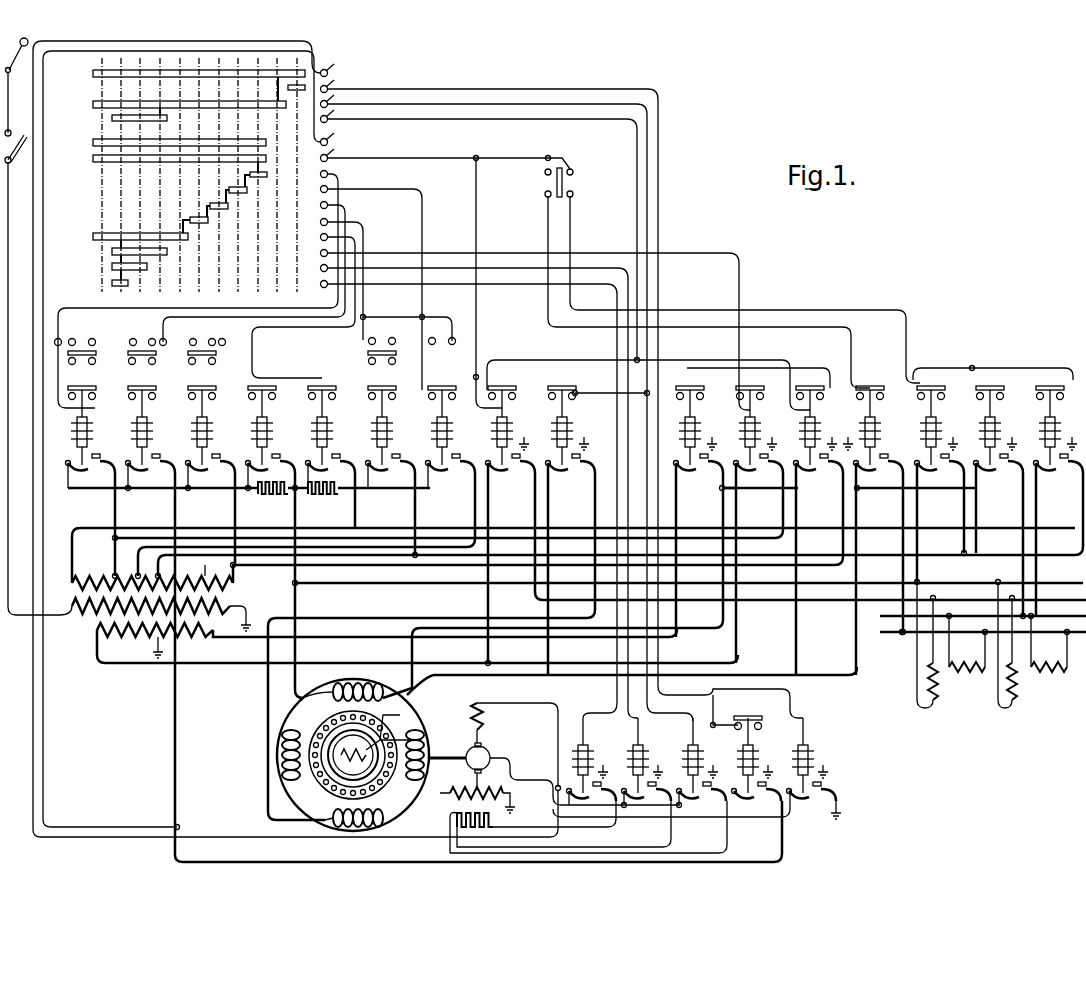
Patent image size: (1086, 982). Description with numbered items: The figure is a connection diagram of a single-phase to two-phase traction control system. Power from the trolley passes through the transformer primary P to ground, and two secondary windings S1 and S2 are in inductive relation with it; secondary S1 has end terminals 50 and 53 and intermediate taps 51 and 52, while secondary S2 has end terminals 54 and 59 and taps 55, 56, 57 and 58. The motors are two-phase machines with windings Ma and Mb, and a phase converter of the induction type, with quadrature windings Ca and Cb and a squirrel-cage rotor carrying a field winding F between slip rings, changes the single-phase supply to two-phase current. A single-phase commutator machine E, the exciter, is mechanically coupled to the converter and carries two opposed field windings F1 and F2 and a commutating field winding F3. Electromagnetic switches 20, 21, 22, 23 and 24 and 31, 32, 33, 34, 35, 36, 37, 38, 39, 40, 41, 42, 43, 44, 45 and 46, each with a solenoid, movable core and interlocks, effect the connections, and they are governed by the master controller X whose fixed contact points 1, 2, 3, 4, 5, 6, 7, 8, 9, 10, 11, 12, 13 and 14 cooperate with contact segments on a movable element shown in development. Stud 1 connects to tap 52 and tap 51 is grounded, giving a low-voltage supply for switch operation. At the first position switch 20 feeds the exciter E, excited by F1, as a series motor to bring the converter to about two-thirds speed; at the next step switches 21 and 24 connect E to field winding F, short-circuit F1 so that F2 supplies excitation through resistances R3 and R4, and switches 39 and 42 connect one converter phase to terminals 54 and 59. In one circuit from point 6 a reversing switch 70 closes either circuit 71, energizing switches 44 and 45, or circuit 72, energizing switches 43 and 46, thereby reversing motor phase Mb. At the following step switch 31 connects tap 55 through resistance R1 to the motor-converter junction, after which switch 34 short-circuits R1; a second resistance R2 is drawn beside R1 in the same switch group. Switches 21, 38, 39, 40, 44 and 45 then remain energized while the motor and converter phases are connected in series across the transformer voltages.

The fixed contact point 1 is at (333, 63).
The fixed contact point 2 is at (562, 398).
The fixed contact point 3 is at (507, 402).
The fixed contact point 4 is at (566, 254).
The fixed contact point 5 is at (336, 133).
The fixed contact point 6 is at (436, 273).
The fixed contact point 7 is at (197, 287).
The fixed contact point 8 is at (377, 286).
The fixed contact point 9 is at (253, 272).
The fixed contact point 10 is at (360, 277).
The fixed contact point 11 is at (303, 304).
The fixed contact point 12 is at (524, 328).
The fixed contact point 13 is at (468, 489).
The fixed contact point 14 is at (459, 500).
The switch 20 is at (757, 758).
The switch 21 is at (586, 761).
The switch 22 is at (647, 763).
The switch 23 is at (702, 763).
The switch 24 is at (814, 768).
The switch 31 is at (93, 458).
The switch 32 is at (155, 601).
The switch 33 is at (211, 452).
The switch 34 is at (275, 542).
The switch 35 is at (332, 457).
The switch 36 is at (392, 448).
The switch 37 is at (451, 443).
The switch 38 is at (515, 526).
The switch 39 is at (572, 530).
The switch 40 is at (691, 511).
The switch 41 is at (752, 524).
The switch 42 is at (765, 521).
The switch 43 is at (874, 530).
The switch 44 is at (934, 484).
The switch 45 is at (994, 502).
The switch 46 is at (998, 491).
The end terminal 50 is at (100, 638).
The tap 51 is at (146, 638).
The tap 52 is at (180, 638).
The end terminal 53 is at (211, 638).
The end terminal 54 is at (85, 567).
The tap 55 is at (104, 567).
The tap 56 is at (128, 567).
The tap 57 is at (150, 567).
The tap 58 is at (186, 567).
The end terminal 59 is at (215, 567).
The reversing switch 70 is at (560, 164).
The circuit 71 is at (546, 173).
The circuit 72 is at (573, 174).
The master controller X is at (184, 182).
The secondary winding S1 is at (138, 640).
The secondary winding S2 is at (140, 577).
The primary winding P is at (152, 612).
The resistance R1 is at (258, 496).
The resistor R2 is at (314, 496).
The resistance R3 is at (490, 828).
The resistance R4 is at (449, 835).
The field winding F is at (327, 752).
The field winding F1 is at (505, 788).
The field winding F2 is at (477, 792).
The commutating field winding F3 is at (475, 708).
The commutator machine E is at (489, 750).
The converter winding Ca is at (283, 758).
The converter winding Cb is at (385, 826).
The motor winding Ma is at (933, 705).
The motor winding Mb is at (968, 676).